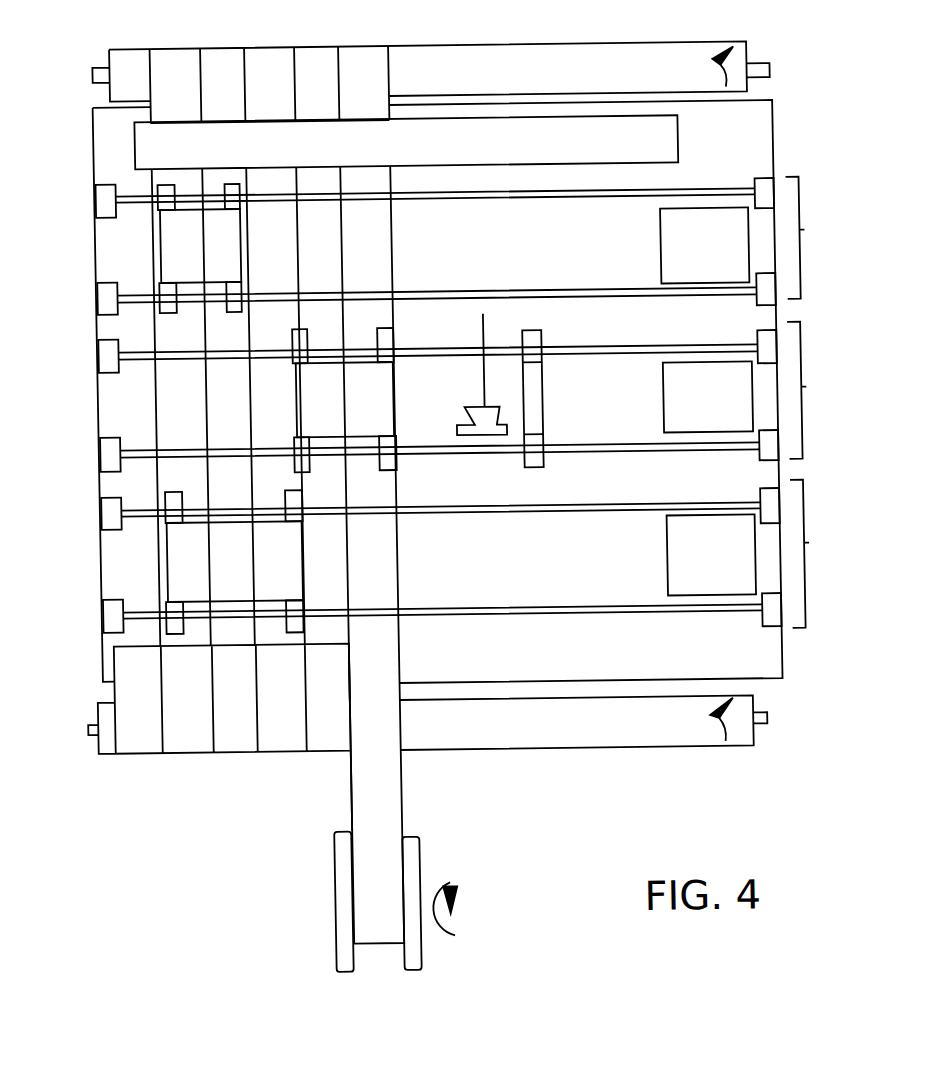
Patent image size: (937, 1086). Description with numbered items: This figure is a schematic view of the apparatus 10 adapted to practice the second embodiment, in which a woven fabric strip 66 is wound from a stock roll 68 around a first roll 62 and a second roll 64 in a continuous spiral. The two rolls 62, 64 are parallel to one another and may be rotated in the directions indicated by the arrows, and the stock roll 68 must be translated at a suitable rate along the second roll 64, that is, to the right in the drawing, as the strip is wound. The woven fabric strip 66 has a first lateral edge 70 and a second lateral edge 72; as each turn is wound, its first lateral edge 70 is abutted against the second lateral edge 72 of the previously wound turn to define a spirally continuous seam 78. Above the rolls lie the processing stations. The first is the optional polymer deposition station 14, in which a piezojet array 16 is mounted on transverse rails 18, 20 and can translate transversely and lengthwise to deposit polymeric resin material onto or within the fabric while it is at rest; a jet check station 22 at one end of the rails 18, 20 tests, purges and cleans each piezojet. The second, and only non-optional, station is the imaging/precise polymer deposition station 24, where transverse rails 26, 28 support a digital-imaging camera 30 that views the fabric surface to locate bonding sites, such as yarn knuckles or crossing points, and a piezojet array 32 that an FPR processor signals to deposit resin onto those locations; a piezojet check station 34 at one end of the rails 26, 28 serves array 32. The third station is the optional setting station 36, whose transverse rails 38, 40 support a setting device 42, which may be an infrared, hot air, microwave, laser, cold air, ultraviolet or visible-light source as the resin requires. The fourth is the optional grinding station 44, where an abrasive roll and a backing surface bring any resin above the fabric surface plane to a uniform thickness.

The apparatus 10 is at (790, 127).
The optional polymer deposition station 14 is at (802, 553).
The piezojet array 16 is at (190, 562).
The transverse rail 18 is at (129, 609).
The transverse rail 20 is at (112, 514).
The jet check station 22 is at (728, 571).
The imaging/precise polymer deposition station 24 is at (685, 394).
The transverse rail 26 is at (122, 436).
The transverse rail 28 is at (114, 361).
The digital-imaging camera 30 is at (479, 315).
The piezojet array 32 is at (312, 404).
The piezojet check station 34 is at (721, 422).
The optional setting station 36 is at (749, 241).
The transverse rail 38 is at (114, 299).
The transverse rail 40 is at (115, 181).
The setting device 42 is at (191, 244).
The optional grinding station 44 is at (677, 144).
The first roll 62 is at (740, 49).
The second roll 64 is at (730, 740).
The woven fabric strip 66 is at (379, 796).
The stock roll 68 is at (321, 897).
The first lateral edge 70 is at (338, 777).
The second lateral edge 72 is at (389, 820).
The spirally continuous seam 78 is at (339, 686).